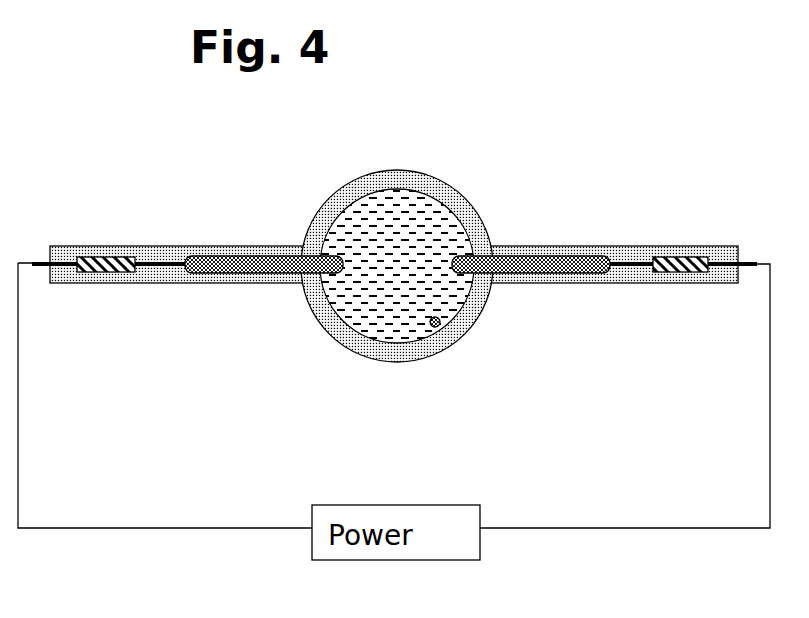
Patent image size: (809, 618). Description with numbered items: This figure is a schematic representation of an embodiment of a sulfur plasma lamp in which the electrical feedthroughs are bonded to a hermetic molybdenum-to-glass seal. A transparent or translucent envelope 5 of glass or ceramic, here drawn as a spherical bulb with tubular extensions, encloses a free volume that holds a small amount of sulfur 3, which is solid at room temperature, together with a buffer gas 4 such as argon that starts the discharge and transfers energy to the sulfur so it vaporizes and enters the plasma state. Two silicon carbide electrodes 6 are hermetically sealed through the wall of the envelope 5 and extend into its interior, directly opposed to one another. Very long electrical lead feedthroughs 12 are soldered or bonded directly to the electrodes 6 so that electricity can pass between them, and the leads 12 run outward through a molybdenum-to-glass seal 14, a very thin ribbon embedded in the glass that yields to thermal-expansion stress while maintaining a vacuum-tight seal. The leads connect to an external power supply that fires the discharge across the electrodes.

The sulfur 3 is at (447, 332).
The buffer gas 4 is at (357, 303).
The envelope 5 is at (363, 183).
The electrodes 6 is at (505, 262).
The electrical lead feedthroughs 12 is at (633, 262).
The molybdenum-to-glass seal 14 is at (683, 272).